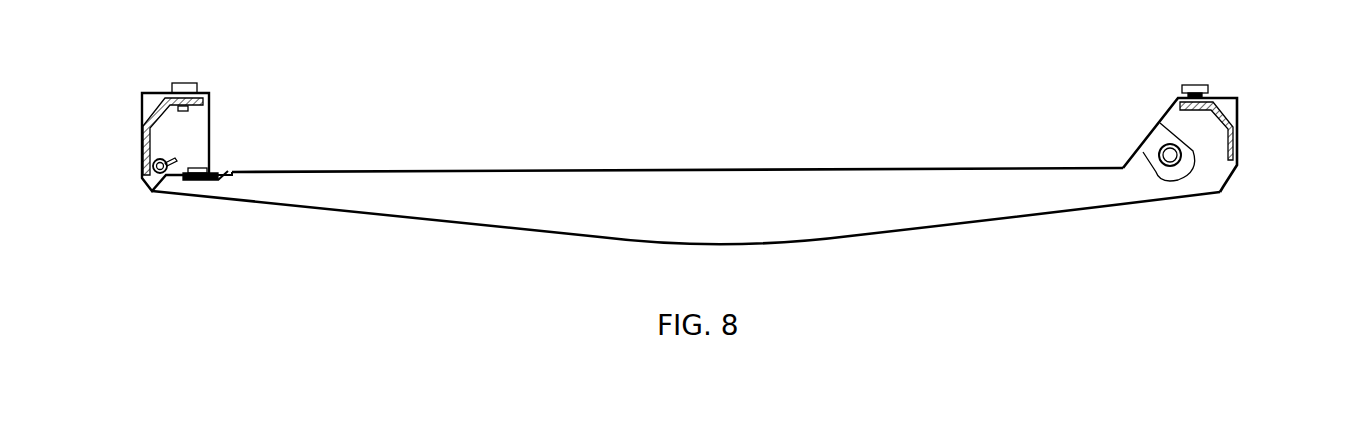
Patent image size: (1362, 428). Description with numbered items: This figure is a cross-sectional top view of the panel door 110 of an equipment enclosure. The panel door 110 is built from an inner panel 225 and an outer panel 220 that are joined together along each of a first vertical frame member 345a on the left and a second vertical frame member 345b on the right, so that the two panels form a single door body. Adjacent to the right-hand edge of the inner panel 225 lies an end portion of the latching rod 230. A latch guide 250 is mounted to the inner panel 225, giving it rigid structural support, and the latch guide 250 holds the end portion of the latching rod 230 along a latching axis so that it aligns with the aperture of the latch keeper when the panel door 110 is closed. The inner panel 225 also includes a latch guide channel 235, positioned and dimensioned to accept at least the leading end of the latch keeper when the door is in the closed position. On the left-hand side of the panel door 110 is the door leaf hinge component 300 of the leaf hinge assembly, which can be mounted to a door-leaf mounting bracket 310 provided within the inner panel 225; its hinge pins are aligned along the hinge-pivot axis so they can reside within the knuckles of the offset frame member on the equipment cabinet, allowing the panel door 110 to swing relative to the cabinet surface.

The panel door 110 is at (686, 232).
The outer panel 220 is at (537, 233).
The inner panel 225 is at (540, 165).
The latching rod 230 is at (1177, 163).
The latch guide channel 235 is at (1140, 114).
The latch guide 250 is at (1158, 175).
The door leaf hinge component 300 is at (148, 188).
The door-leaf mounting bracket 310 is at (230, 180).
The first vertical frame member 345a is at (142, 98).
The second vertical frame member 345b is at (1223, 105).